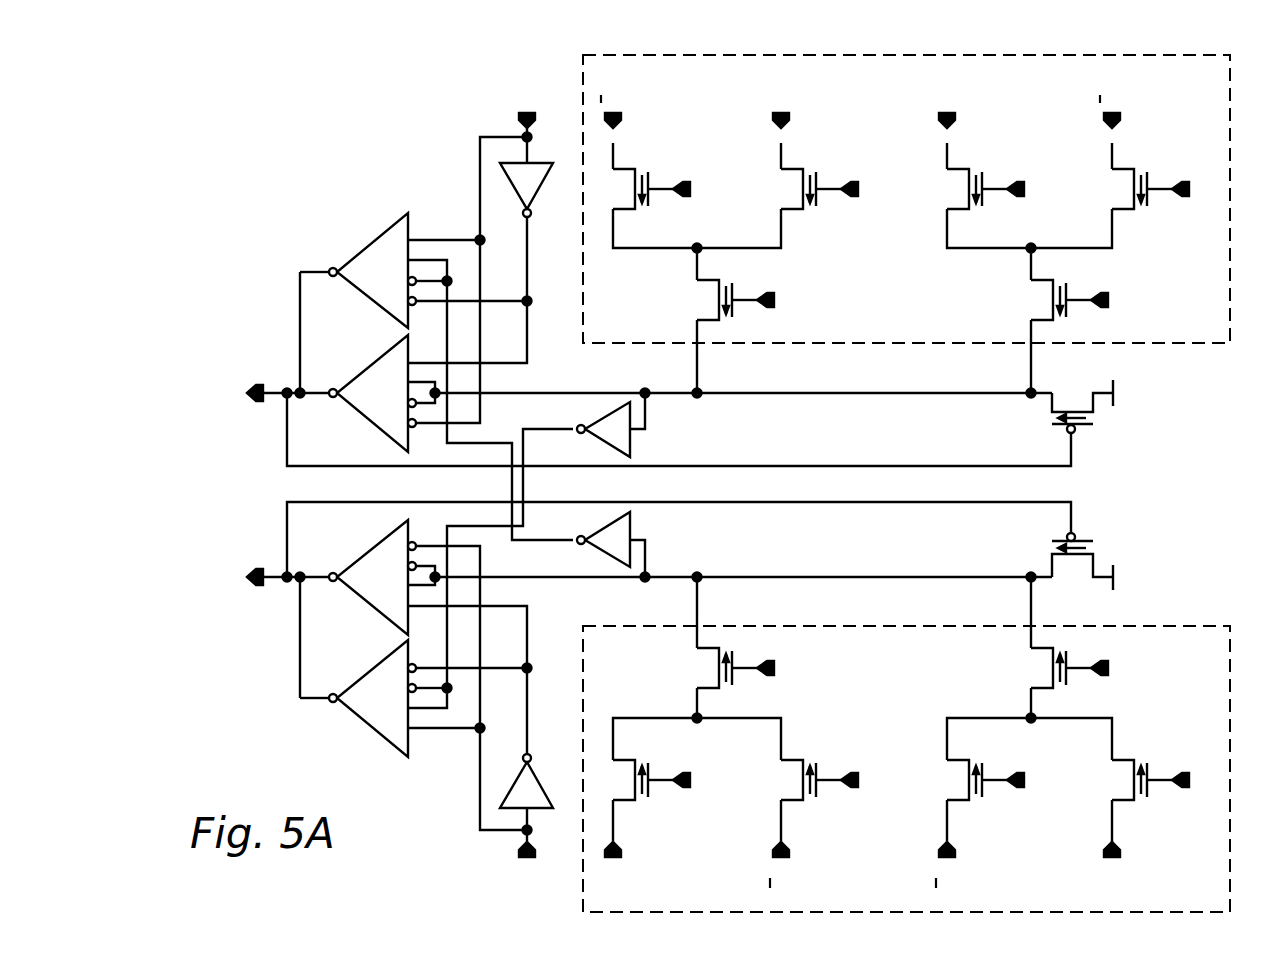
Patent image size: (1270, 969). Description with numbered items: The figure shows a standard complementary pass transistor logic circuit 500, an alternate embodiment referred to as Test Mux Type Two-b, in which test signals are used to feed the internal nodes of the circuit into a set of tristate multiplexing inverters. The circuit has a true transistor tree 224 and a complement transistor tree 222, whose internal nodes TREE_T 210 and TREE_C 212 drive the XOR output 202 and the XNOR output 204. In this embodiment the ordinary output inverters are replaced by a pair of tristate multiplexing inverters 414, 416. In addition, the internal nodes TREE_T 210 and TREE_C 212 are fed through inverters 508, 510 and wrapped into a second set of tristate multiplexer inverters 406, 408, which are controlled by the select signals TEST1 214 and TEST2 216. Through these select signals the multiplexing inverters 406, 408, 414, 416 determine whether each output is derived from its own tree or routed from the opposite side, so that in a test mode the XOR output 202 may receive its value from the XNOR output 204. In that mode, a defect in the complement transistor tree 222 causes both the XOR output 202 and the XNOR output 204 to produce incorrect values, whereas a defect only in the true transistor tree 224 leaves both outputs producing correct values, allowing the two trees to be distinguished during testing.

The standard CPL circuit 500 is at (270, 150).
The XOR output 202 is at (241, 382).
The XNOR output 204 is at (241, 592).
The TREE_T internal node 210 is at (935, 395).
The TREE_C internal node 212 is at (935, 576).
The TEST1 select signal 214 is at (507, 112).
The TEST2 select signal 216 is at (508, 860).
The complement transistor tree 222 is at (1192, 626).
The true transistor tree 224 is at (1190, 345).
The tristate multiplexer inverter 406 is at (364, 250).
The tristate multiplexer inverter 408 is at (366, 722).
The tristate multiplexing inverter 414 is at (364, 372).
The tristate multiplexing inverter 416 is at (366, 598).
The inverter 508 is at (604, 414).
The inverter 510 is at (604, 554).